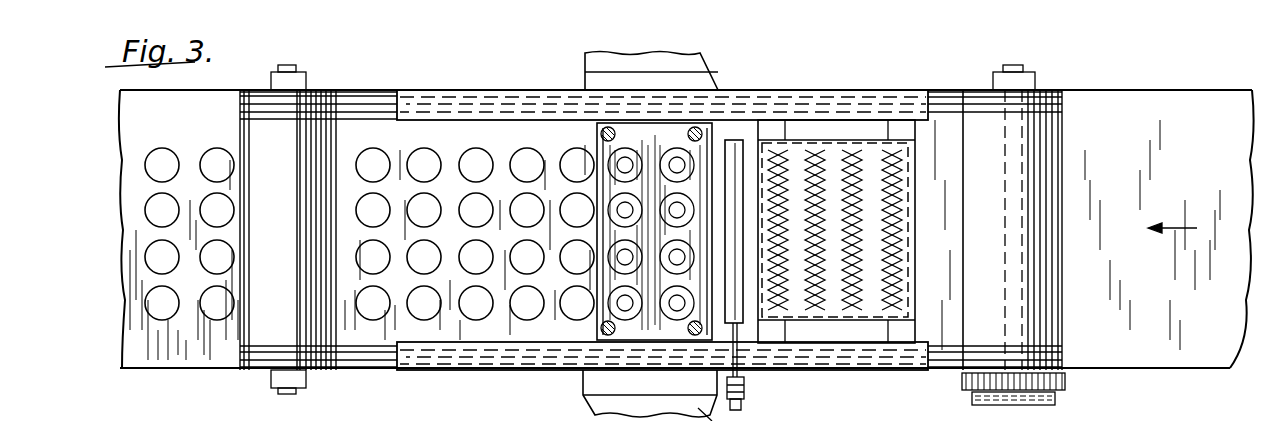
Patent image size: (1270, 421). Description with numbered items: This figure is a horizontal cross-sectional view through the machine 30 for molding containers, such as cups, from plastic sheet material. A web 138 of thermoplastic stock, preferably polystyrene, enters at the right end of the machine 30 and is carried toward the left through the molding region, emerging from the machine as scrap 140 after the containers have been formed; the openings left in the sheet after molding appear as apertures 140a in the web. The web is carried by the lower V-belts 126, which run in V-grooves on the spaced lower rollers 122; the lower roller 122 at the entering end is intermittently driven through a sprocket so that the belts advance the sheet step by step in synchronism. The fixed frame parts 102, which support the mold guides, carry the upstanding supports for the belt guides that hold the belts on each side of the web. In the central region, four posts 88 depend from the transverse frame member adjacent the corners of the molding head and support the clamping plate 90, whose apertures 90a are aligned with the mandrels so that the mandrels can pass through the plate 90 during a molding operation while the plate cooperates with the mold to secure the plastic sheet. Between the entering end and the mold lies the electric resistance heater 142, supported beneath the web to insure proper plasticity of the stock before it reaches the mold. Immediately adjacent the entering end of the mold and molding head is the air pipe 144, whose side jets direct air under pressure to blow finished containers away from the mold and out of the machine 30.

The machine 30 is at (938, 73).
The posts 88 is at (697, 122).
The clamping plate 90 is at (597, 136).
The plate apertures 90a is at (475, 284).
The fixed frame parts 102 is at (707, 78).
The lower rollers 122 is at (212, 382).
The lower V-belts 126 is at (938, 100).
The web of plastic sheet material 138 is at (1208, 375).
The scrap 140 is at (143, 378).
The belt apertures 140a is at (200, 414).
The electric resistance heater 142 is at (822, 150).
The air pipe 144 is at (733, 140).